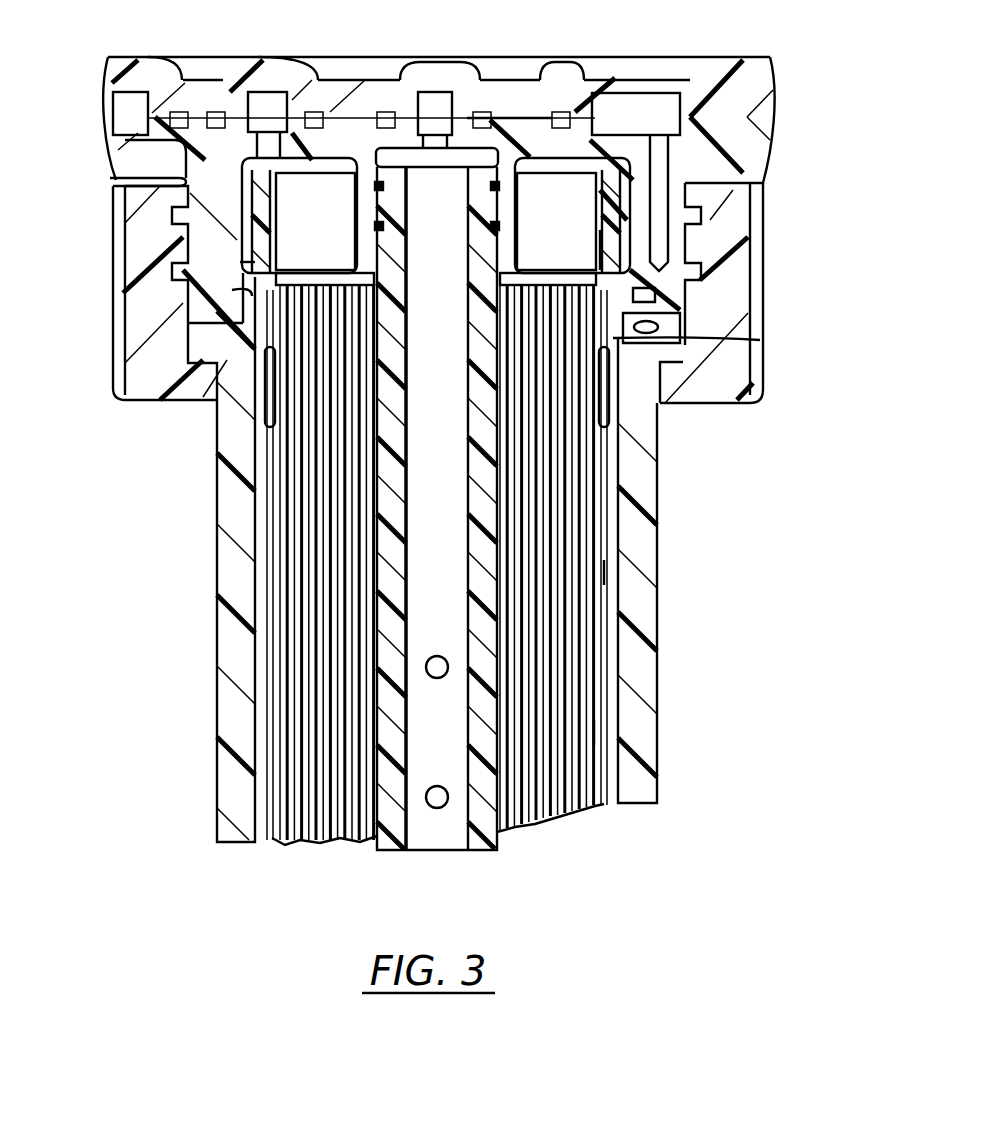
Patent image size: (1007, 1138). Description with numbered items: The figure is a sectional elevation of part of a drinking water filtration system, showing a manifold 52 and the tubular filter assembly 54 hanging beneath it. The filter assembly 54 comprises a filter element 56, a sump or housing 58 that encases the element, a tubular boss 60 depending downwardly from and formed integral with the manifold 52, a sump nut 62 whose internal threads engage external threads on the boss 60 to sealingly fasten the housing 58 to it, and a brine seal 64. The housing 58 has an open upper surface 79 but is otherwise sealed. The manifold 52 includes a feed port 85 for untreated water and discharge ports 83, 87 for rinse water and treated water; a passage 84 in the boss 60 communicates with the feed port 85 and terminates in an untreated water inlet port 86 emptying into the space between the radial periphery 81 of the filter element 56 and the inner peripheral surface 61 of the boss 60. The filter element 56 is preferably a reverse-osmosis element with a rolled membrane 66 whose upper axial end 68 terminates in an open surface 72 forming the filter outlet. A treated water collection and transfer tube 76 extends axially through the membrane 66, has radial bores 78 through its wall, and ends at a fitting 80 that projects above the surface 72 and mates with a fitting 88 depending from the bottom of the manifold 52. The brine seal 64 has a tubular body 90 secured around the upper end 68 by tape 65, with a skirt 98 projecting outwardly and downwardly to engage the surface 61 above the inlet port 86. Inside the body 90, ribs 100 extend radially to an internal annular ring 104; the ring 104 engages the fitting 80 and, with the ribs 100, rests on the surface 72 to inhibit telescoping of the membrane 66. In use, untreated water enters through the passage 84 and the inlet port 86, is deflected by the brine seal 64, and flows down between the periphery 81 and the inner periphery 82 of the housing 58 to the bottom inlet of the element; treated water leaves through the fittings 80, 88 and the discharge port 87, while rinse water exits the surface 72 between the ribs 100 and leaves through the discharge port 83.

The manifold 52 is at (770, 62).
The tubular filter assembly 54 is at (663, 769).
The filter element 56 is at (270, 688).
The housing 58 is at (657, 678).
The boss 60 is at (185, 217).
The inner peripheral surface 61 is at (250, 291).
The sump nut 62 is at (767, 264).
The brine seal 64 is at (240, 243).
The tape 65 is at (606, 573).
The filter membrane 66 is at (594, 734).
The upper axial end 68 is at (760, 340).
The upper open surface 72 is at (586, 276).
The treated water collection and transfer tube 76 is at (388, 860).
The radial bores 78 is at (440, 806).
The open upper surface 79 is at (637, 300).
The fitting 80 is at (497, 120).
The radial periphery 81 is at (604, 648).
The inner periphery 82 is at (265, 648).
The discharge port 83 is at (245, 157).
The passage 84 is at (762, 143).
The feed port 85 is at (645, 120).
The untreated water inlet port 86 is at (604, 228).
The discharge port 87 is at (408, 132).
The fitting 88 is at (350, 205).
The tubular body 90 is at (240, 268).
The skirt 98 is at (110, 161).
The ribs 100 is at (338, 264).
The internal annular ring 104 is at (513, 261).